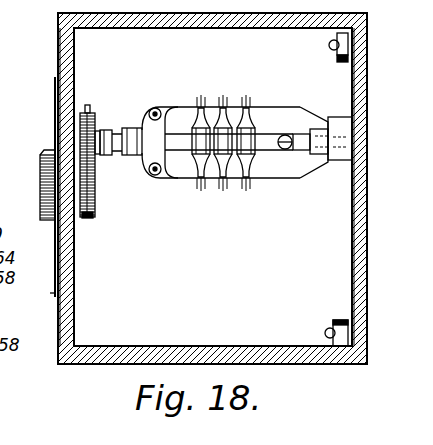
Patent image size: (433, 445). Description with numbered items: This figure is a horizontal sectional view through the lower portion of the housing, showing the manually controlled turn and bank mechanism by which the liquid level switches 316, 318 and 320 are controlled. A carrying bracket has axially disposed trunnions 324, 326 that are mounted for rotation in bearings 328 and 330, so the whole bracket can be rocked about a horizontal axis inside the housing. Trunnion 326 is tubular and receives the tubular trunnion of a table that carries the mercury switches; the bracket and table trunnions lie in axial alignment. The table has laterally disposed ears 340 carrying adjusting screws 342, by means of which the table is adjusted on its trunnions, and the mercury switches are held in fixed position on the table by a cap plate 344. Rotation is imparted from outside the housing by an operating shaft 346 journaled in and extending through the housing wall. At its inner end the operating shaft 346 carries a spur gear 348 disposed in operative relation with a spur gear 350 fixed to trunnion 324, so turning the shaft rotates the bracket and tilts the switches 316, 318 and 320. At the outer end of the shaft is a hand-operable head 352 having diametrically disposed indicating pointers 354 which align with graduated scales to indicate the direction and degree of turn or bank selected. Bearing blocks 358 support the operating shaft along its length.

The liquid level switch 316 is at (200, 186).
The liquid level switch 318 is at (228, 190).
The liquid level switch 320 is at (245, 185).
The trunnion 324 is at (63, 137).
The trunnion 326 is at (360, 141).
The bearing 328 is at (58, 112).
The bearing 330 is at (352, 122).
The ears 340 is at (205, 107).
The adjusting screws 342 is at (151, 108).
The cap plate 344 is at (278, 140).
The operating shaft 346 is at (95, 186).
The spur gear 348 is at (91, 216).
The spur gear 350 is at (91, 101).
The hand-operable head 352 is at (42, 184).
The indicating pointers 354 is at (55, 88).
The bearing block 358 is at (133, 128).